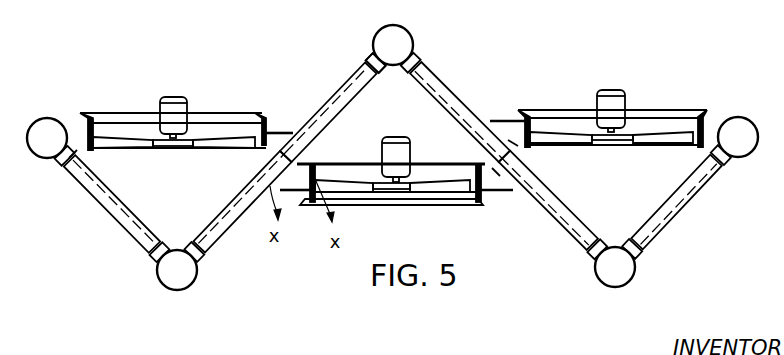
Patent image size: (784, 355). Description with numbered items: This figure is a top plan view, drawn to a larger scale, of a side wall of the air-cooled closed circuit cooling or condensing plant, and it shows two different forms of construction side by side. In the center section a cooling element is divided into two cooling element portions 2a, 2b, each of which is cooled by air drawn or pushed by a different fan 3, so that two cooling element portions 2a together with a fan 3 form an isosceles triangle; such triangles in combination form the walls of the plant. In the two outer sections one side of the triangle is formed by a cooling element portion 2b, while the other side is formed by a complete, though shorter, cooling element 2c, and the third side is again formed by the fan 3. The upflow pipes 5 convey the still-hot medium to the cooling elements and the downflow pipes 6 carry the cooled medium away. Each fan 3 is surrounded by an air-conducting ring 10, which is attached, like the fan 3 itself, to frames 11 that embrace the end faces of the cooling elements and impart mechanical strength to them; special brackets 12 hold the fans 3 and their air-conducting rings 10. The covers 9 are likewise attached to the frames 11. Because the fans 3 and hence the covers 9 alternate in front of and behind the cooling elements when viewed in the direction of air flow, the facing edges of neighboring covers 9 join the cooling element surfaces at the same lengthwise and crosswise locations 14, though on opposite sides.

The cooling element portion 2a is at (348, 88).
The cooling element portion 2b is at (237, 215).
The shorter cooling element 2c is at (110, 222).
The fan 3 is at (174, 107).
The upflow pipe 5 is at (183, 283).
The downflow pipe 6 is at (47, 125).
The cover 9 is at (72, 162).
The air-conducting ring 10 is at (91, 114).
The frame 11 is at (377, 55).
The bracket 12 is at (268, 132).
The lengthwise and crosswise location 14 is at (518, 166).